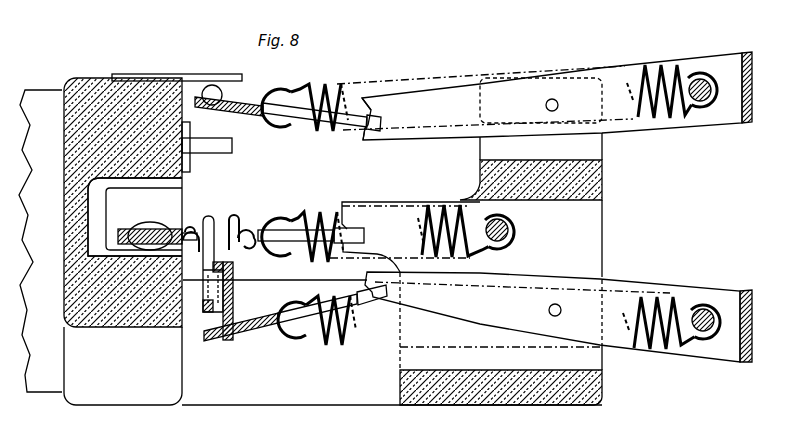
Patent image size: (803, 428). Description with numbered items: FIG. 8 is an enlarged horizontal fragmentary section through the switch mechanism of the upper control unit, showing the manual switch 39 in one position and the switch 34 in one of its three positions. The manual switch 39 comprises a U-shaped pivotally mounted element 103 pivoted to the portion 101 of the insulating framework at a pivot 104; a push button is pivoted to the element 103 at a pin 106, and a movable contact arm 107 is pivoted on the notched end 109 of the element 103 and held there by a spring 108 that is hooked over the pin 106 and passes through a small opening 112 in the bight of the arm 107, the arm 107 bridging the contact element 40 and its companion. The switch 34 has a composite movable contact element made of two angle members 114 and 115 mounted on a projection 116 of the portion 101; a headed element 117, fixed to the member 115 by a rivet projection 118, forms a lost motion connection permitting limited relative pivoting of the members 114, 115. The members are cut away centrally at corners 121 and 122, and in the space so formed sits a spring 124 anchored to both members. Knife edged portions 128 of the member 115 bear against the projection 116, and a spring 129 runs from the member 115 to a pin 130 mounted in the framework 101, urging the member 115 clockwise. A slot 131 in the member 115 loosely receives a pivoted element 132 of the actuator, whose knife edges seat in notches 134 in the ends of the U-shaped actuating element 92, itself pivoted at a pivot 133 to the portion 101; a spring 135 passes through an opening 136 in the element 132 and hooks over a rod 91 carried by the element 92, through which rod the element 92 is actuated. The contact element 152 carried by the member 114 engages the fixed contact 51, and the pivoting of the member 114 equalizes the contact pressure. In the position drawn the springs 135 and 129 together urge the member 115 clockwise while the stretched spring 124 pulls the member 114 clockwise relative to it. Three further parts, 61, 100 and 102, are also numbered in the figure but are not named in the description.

The switch 34 is at (285, 228).
The manual switch 39 is at (258, 102).
The contact element 40 is at (236, 74).
The contact 51 is at (183, 184).
The rivet 61 is at (140, 225).
The rod 91 is at (704, 308).
The U-shaped actuating element 92 is at (752, 291).
The body 100 is at (123, 241).
The portion of the insulating framework 101 is at (590, 184).
The base 102 is at (333, 393).
The pivotally mounted element 103 is at (740, 54).
The pivot 104 is at (546, 105).
The pin 106 is at (708, 113).
The movable contact arm 107 is at (300, 130).
The spring 108 is at (340, 100).
The notched end 109 is at (372, 108).
The small opening 112 is at (260, 122).
The angle member 114 is at (173, 228).
The angle member 115 is at (232, 267).
The projection 116 is at (365, 200).
The headed element 117 is at (200, 303).
The rivet projection 118 is at (233, 292).
The cut-away corner 121 is at (243, 218).
The cut-away corner 122 is at (212, 254).
The spring 124 is at (206, 220).
The knife edged portions 128 is at (366, 241).
The spring 129 is at (272, 210).
The pin 130 is at (508, 226).
The slot 131 is at (247, 333).
The pivoted element 132 is at (261, 333).
The pivot 133 is at (549, 311).
The notches 134 is at (397, 285).
The spring 135 is at (341, 348).
The opening 136 is at (277, 332).
The contact element 152 is at (146, 222).